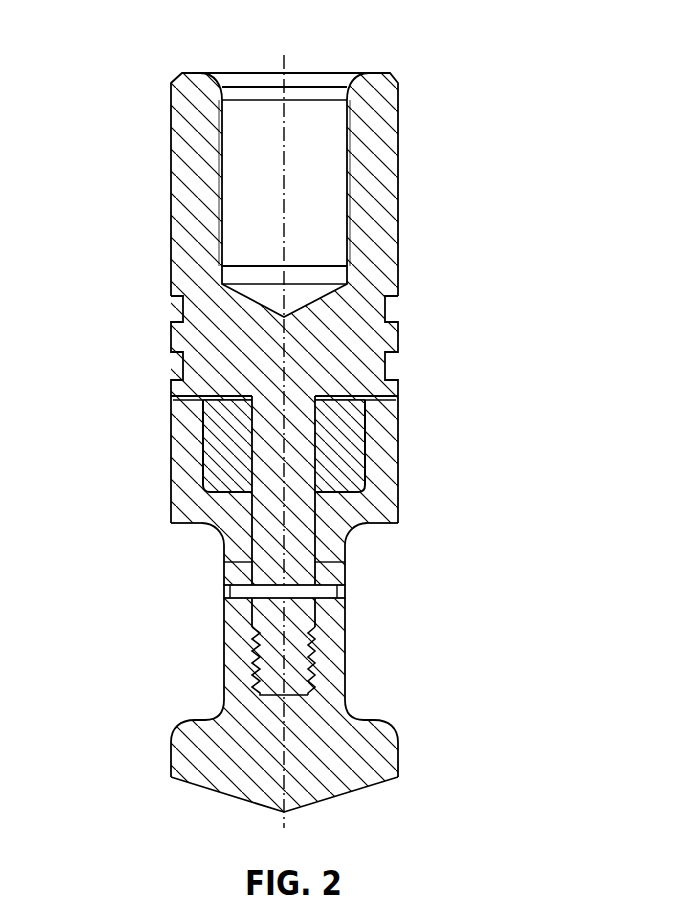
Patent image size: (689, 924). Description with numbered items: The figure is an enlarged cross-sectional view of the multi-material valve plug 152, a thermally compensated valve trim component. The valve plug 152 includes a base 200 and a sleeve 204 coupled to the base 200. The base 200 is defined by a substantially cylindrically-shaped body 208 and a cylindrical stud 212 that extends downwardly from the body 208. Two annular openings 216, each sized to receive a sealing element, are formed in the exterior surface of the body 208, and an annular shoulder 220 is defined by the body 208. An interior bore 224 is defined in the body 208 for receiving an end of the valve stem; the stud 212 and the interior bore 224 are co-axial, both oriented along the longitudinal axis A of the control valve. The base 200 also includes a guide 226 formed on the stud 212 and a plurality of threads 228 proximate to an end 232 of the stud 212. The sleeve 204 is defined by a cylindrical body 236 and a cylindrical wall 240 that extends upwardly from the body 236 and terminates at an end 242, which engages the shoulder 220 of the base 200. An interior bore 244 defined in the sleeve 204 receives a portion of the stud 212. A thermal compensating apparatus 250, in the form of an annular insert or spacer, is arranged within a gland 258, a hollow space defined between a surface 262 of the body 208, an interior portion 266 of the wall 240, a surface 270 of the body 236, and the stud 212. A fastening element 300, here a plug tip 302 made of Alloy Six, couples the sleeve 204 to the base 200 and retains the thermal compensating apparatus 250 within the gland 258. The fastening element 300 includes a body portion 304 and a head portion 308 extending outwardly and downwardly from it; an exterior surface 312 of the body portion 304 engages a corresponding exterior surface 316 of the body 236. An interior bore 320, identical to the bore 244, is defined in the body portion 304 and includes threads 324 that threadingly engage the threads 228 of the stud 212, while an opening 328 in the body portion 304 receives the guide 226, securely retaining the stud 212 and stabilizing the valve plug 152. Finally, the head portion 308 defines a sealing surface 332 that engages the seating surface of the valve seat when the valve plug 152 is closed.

The valve plug 152 is at (432, 107).
The base 200 is at (197, 92).
The sleeve 204 is at (197, 434).
The body 208 is at (373, 100).
The stud 212 is at (293, 554).
The annular openings 216 is at (390, 320).
The annular shoulder 220 is at (171, 413).
The interior bore 224 is at (222, 142).
The guide 226 is at (229, 622).
The threads 228 is at (314, 645).
The end 232 is at (322, 706).
The body 236 is at (327, 548).
The wall 240 is at (187, 457).
The end 242 is at (396, 405).
The interior bore 244 is at (312, 513).
The thermal compensating apparatus 250 is at (372, 472).
The gland 258 is at (187, 475).
The surface 262 is at (181, 365).
The interior portion 266 is at (341, 455).
The surface 270 is at (172, 517).
The fastening element 300 is at (208, 731).
The plug tip 302 is at (197, 738).
The body portion 304 is at (330, 625).
The head portion 308 is at (360, 752).
The exterior surface 312 is at (226, 573).
The exterior surface 316 is at (220, 547).
The interior bore 320 is at (228, 589).
The threads 324 is at (298, 667).
The opening 328 is at (346, 592).
The sealing surface 332 is at (396, 780).
The longitudinal axis A is at (285, 62).